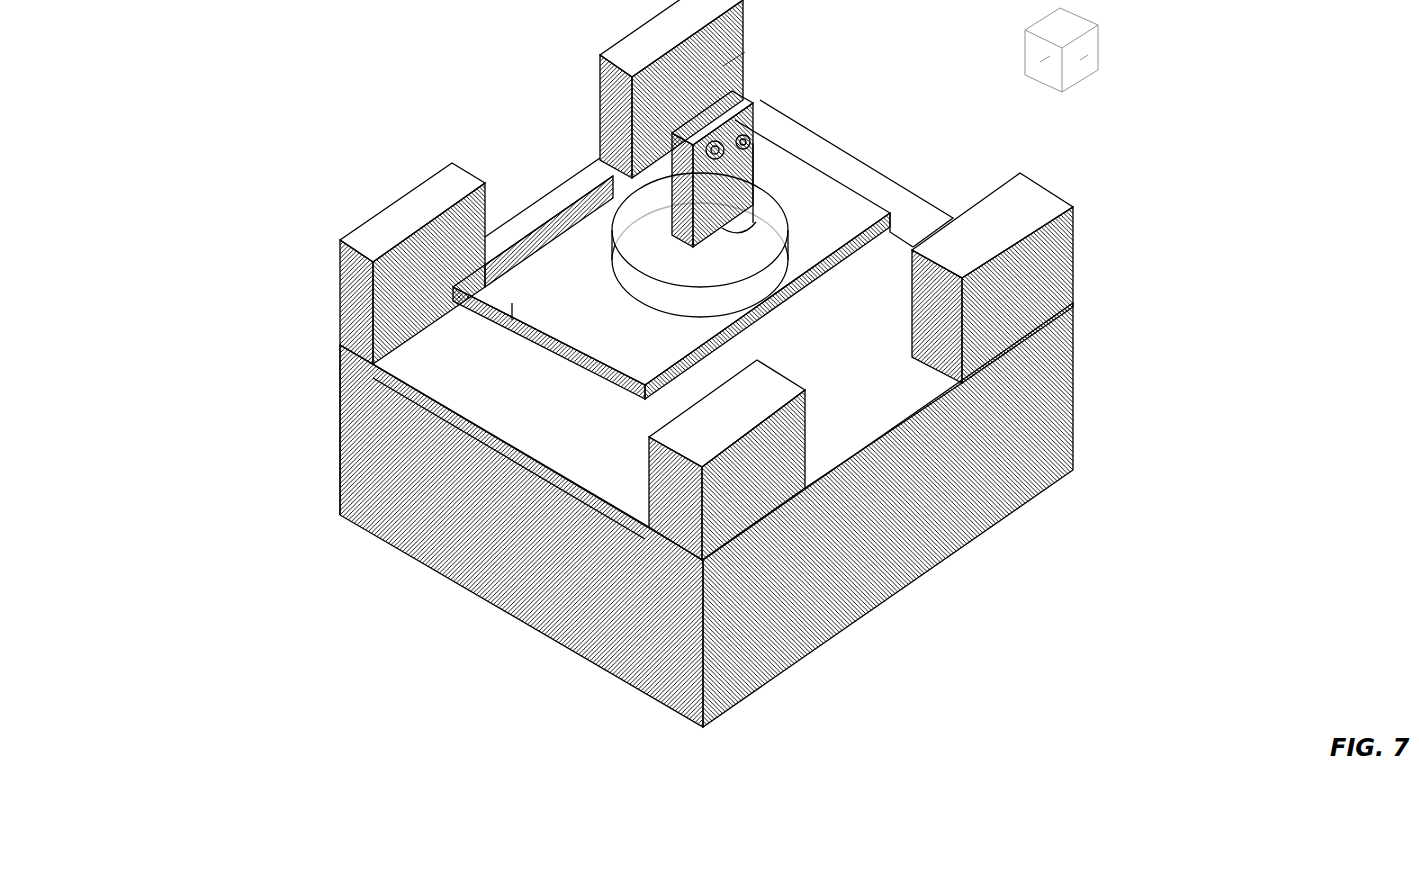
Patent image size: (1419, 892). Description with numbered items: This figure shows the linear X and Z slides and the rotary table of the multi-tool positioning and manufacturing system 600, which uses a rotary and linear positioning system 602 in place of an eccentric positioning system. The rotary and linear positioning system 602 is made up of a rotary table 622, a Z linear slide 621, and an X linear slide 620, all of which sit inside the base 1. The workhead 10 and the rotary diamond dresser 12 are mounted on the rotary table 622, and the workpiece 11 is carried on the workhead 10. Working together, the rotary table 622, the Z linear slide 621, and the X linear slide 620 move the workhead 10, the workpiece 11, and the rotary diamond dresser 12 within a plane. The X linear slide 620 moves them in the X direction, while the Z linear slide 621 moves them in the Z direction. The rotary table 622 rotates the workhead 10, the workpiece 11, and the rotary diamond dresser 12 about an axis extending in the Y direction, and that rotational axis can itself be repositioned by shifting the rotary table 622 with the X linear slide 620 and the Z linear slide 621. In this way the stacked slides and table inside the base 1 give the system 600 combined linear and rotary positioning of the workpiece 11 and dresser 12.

The multi-tool positioning and manufacturing system 600 is at (272, 178).
The rotary and linear positioning system 602 is at (985, 537).
The X linear slide 620 is at (403, 194).
The Z linear slide 621 is at (597, 293).
The rotary table 622 is at (590, 240).
The workhead 10 is at (671, 89).
The workpiece 11 is at (737, 57).
The rotary diamond dresser 12 is at (778, 114).
The base 1 is at (340, 443).